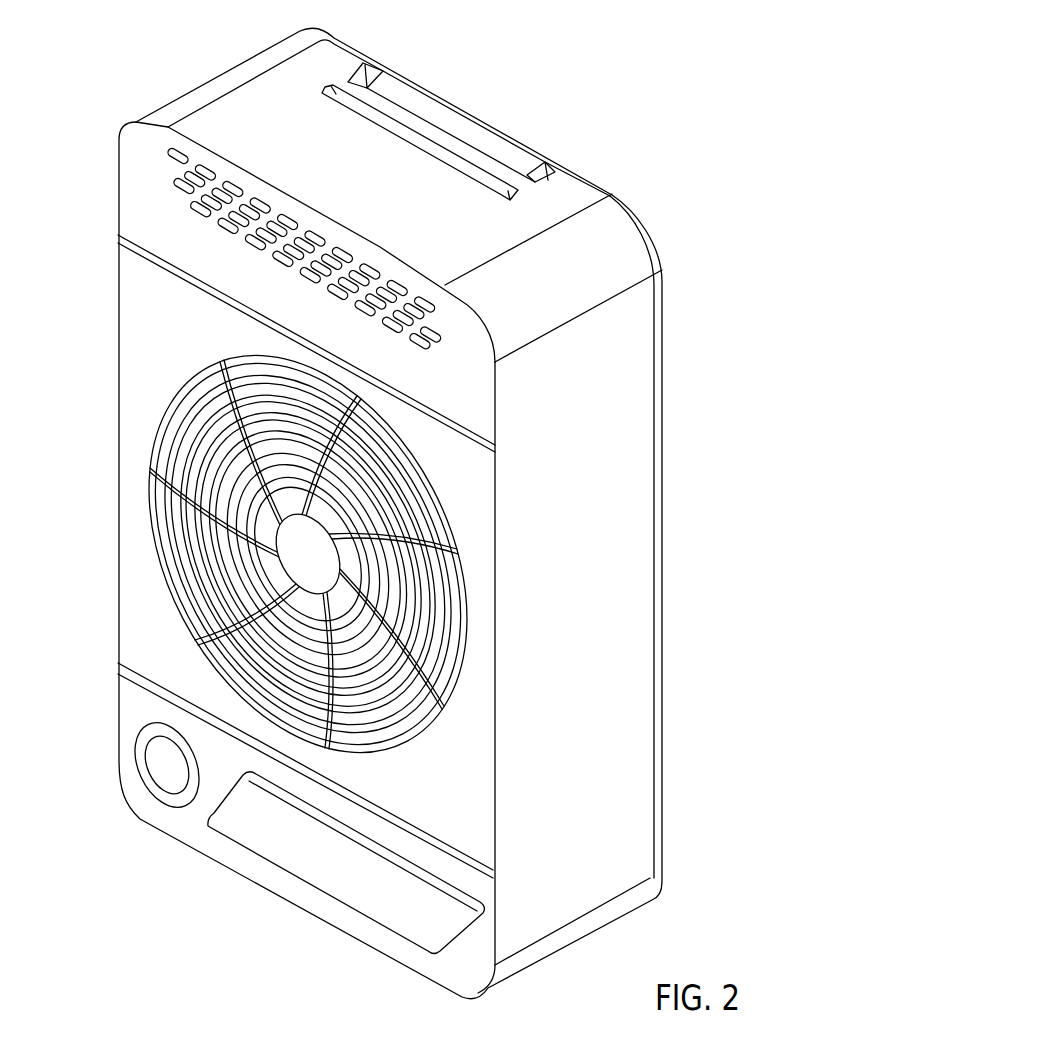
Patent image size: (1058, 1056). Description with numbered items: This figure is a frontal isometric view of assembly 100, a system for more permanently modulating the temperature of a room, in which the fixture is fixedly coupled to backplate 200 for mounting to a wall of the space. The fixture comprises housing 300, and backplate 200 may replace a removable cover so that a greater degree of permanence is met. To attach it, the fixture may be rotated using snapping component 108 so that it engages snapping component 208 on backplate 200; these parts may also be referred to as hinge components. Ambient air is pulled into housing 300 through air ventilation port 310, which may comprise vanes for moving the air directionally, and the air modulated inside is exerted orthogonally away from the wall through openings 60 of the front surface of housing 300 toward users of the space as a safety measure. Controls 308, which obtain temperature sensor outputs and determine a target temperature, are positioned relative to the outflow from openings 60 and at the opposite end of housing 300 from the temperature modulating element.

The assembly 100 is at (845, 182).
The backplate 200 is at (660, 448).
The housing 300 is at (623, 580).
The snapping component 208 is at (452, 110).
The snapping component 108 is at (481, 159).
The openings 60 is at (168, 177).
The air ventilation port 310 is at (200, 378).
The controls 308 is at (357, 887).